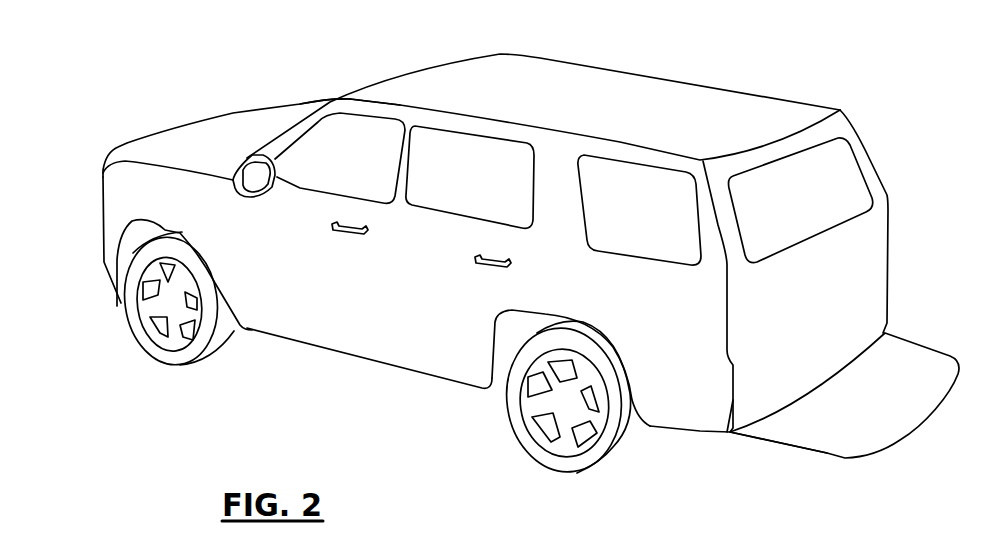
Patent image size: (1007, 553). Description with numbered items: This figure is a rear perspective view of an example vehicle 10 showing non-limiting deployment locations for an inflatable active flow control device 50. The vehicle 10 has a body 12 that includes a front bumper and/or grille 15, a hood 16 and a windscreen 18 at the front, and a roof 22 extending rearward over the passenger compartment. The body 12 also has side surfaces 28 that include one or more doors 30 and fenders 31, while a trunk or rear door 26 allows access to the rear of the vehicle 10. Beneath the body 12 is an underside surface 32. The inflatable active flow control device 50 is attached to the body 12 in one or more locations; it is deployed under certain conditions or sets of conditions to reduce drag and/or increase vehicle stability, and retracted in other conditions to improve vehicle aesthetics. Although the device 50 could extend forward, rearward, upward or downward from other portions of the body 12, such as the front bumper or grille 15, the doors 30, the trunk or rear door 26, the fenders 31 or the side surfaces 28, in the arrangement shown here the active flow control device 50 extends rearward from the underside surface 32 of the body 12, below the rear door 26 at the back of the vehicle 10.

The vehicle 10 is at (202, 67).
The body 12 is at (161, 129).
The front bumper and/or grille 15 is at (100, 212).
The hood 16 is at (208, 128).
The windscreen 18 is at (313, 97).
The roof 22 is at (663, 110).
The trunk or rear door 26 is at (820, 342).
The side surfaces 28 is at (322, 196).
The doors 30 is at (317, 283).
The fenders 31 is at (383, 310).
The underside surface 32 is at (728, 458).
The inflatable active flow control device 50 is at (851, 460).